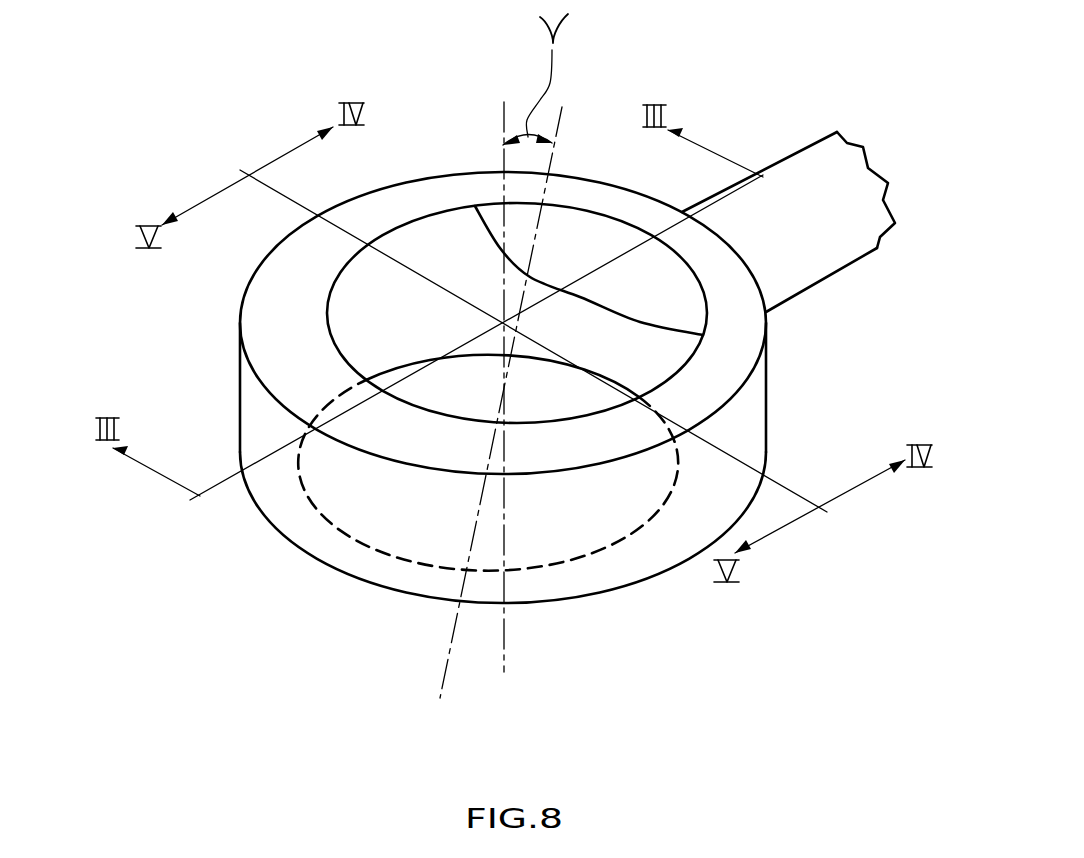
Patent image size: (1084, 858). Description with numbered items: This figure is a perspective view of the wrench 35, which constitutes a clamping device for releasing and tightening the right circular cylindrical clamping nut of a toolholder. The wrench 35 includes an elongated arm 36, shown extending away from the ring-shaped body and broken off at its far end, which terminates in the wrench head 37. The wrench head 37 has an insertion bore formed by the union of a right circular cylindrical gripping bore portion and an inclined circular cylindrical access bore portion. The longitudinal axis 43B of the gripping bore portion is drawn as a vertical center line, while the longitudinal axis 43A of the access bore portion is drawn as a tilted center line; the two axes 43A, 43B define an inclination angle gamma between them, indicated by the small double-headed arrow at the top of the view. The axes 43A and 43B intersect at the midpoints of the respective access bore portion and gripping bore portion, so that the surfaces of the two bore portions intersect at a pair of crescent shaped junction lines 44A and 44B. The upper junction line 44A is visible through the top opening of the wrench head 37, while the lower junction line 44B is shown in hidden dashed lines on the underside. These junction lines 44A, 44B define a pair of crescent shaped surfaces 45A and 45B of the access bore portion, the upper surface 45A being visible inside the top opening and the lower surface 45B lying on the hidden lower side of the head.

The wrench 35 is at (825, 194).
The elongated arm 36 is at (855, 228).
The wrench head 37 is at (282, 507).
The longitudinal axis 43A is at (559, 127).
The longitudinal axis 43B is at (502, 127).
The crescent shaped junction line 44A is at (643, 322).
The crescent shaped junction line 44B is at (450, 480).
The crescent shaped surface 45A is at (578, 250).
The crescent shaped surface 45B is at (342, 487).